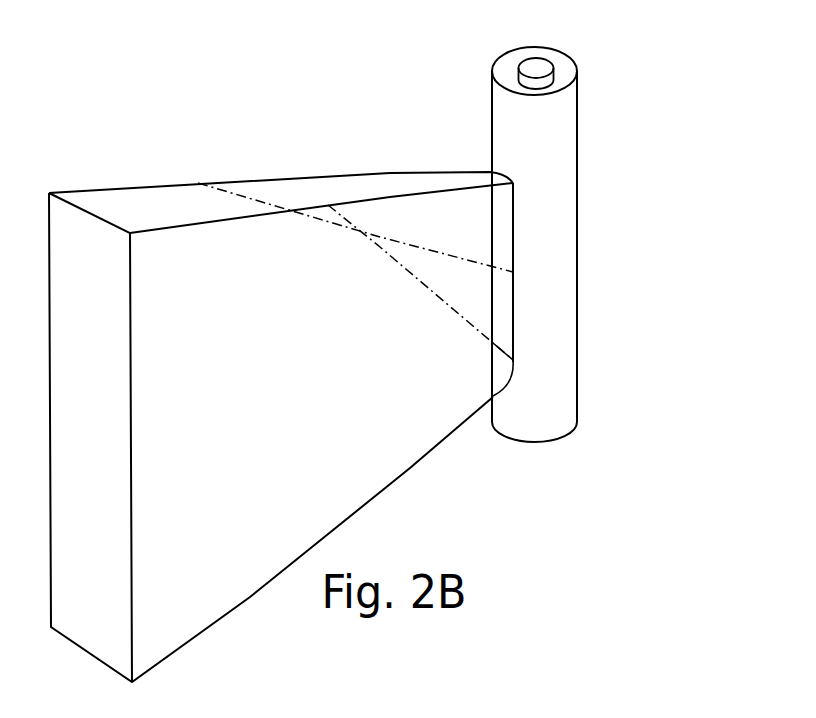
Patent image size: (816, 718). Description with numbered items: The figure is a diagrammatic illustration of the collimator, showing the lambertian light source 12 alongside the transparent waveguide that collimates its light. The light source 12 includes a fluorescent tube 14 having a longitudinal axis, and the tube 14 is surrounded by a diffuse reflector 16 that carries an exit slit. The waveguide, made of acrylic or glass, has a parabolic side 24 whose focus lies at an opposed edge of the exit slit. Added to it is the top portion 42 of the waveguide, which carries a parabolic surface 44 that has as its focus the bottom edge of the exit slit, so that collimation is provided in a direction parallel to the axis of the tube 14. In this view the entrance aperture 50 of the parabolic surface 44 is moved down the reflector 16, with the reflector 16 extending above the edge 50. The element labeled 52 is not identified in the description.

The lambertian light source 12 is at (533, 221).
The fluorescent tube 14 is at (537, 66).
The diffuse reflector 16 is at (570, 95).
The parabolic side of waveguide 24 is at (272, 410).
The top portion of waveguide 42 is at (196, 161).
The parabolic surface 44 is at (168, 259).
The entrance aperture 50 is at (509, 183).
The top surface of light source 52 is at (505, 93).